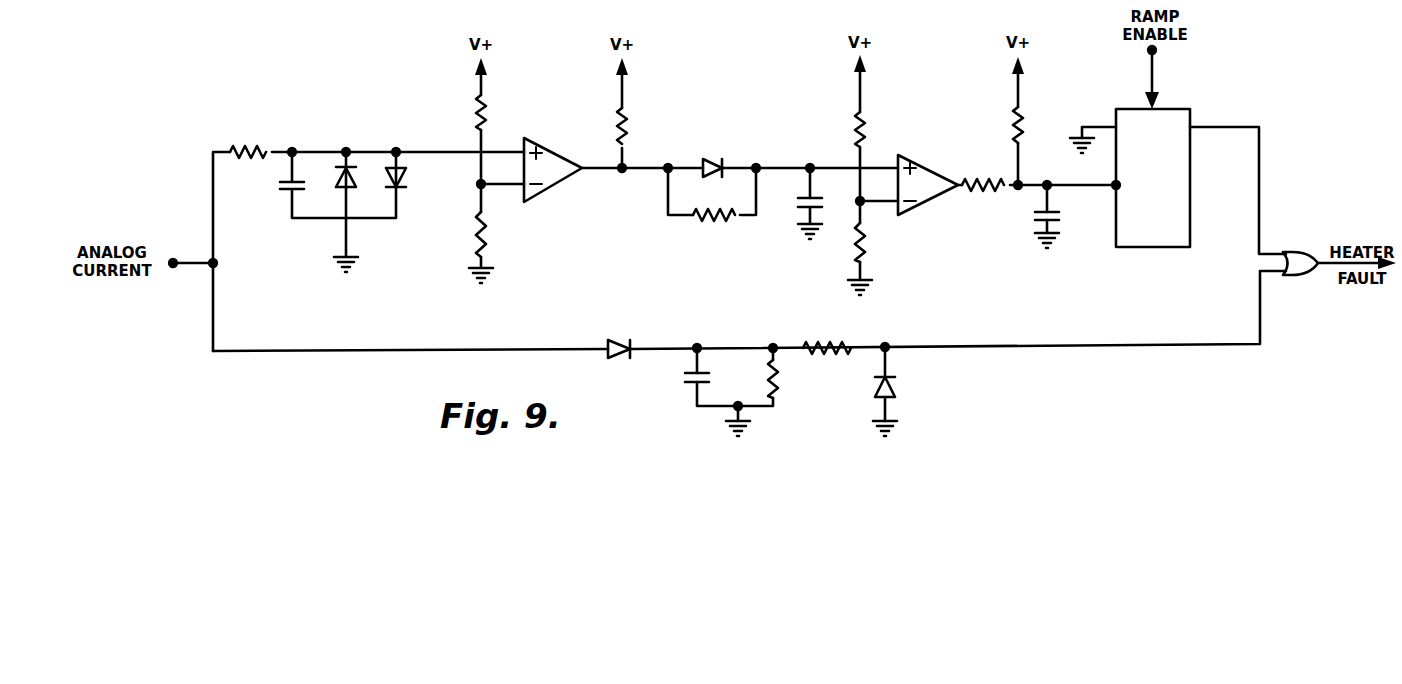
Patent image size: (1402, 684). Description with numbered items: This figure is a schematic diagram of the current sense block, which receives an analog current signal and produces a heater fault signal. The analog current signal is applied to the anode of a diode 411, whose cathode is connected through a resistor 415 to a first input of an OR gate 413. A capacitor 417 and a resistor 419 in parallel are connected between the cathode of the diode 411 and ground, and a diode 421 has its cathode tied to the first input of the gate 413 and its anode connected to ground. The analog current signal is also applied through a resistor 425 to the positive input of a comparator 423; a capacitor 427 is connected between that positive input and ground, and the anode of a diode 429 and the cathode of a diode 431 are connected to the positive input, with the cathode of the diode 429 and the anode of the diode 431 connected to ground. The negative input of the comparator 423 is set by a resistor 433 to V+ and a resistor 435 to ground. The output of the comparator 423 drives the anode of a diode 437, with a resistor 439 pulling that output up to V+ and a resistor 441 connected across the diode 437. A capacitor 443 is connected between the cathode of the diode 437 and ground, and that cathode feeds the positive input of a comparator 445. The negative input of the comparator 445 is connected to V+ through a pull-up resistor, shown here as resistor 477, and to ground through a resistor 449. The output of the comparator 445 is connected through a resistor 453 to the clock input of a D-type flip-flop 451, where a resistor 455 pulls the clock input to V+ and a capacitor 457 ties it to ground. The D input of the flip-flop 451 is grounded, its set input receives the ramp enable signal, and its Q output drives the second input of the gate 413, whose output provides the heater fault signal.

The diode 411 is at (636, 306).
The OR gate 413 is at (1291, 250).
The resistor 415 is at (833, 358).
The capacitor 417 is at (692, 392).
The resistor 419 is at (777, 392).
The diode 421 is at (898, 382).
The comparator 423 is at (550, 148).
The resistor 425 is at (252, 148).
The capacitor 427 is at (294, 196).
The diode 429 is at (350, 163).
The diode 431 is at (404, 192).
The resistor 433 is at (486, 102).
The resistor 435 is at (488, 232).
The diode 437 is at (712, 160).
The resistor 439 is at (628, 124).
The resistor 441 is at (702, 222).
The capacitor 443 is at (802, 214).
The comparator 445 is at (910, 212).
The resistor 449 is at (855, 262).
The D-type flip-flop 451 is at (1135, 250).
The resistor 453 is at (978, 180).
The resistor 455 is at (1014, 122).
The capacitor 457 is at (1040, 222).
The resistor 477 is at (855, 128).